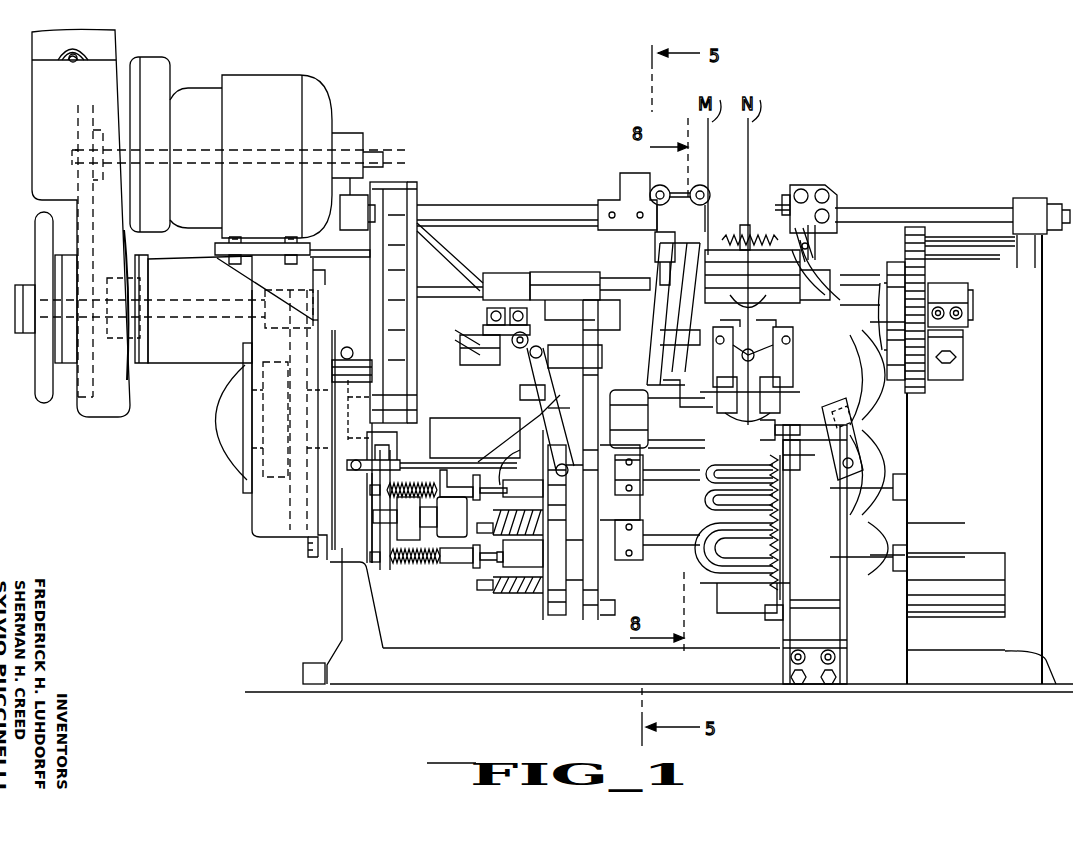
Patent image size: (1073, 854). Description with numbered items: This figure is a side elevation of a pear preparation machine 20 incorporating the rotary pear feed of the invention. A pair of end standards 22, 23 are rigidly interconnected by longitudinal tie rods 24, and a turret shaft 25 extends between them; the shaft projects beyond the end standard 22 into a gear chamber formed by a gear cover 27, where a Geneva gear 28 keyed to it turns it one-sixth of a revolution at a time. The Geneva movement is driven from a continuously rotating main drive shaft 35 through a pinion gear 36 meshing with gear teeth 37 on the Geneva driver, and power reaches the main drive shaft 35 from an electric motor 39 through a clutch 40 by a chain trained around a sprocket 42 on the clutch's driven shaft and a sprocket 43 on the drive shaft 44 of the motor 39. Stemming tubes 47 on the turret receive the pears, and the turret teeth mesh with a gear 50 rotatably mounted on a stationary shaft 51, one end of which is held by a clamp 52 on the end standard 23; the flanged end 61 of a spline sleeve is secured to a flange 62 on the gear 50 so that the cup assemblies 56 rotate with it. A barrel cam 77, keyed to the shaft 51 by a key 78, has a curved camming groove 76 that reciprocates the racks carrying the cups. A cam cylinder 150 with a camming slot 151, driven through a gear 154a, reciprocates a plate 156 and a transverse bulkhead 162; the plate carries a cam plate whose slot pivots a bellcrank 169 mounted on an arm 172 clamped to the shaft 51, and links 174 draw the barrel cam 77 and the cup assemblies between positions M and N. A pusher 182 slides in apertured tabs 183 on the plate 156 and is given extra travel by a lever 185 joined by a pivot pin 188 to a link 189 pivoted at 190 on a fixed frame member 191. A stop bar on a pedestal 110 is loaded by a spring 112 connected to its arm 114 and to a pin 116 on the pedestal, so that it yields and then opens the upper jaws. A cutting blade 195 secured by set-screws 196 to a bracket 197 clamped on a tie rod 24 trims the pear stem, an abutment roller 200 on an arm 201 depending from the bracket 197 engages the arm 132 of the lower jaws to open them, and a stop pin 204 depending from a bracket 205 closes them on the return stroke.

The pear processing machine 20 is at (843, 133).
The end standard 22 is at (357, 592).
The end standard 23 is at (990, 484).
The longitudinal tie rods 24 is at (445, 205).
The turret shaft 25 is at (700, 423).
The gear cover 27 is at (253, 428).
The Geneva gear 28 is at (272, 466).
The main drive shaft 35 is at (228, 302).
The pinion gear 36 is at (292, 293).
The gear teeth 37 is at (300, 548).
The electric motor 39 is at (332, 99).
The clutch 40 is at (140, 328).
The sprocket 42 is at (84, 388).
The sprocket 43 is at (78, 133).
The drive shaft 44 is at (244, 153).
The stemming tubes 47 is at (872, 346).
The gear 50 is at (918, 395).
The shaft 51 is at (972, 307).
The clamp 52 is at (972, 316).
The cup assembly 56 is at (780, 378).
The flanged end 61 is at (980, 270).
The flange 62 is at (966, 343).
The curved camming groove 76 is at (655, 241).
The barrel cam 77 is at (595, 295).
The key 78 is at (600, 272).
The pedestal 110 is at (840, 445).
The spring 112 is at (778, 505).
The arm 114 is at (796, 470).
The pin 116 is at (765, 605).
The arm 132 is at (656, 422).
The cam cylinder 150 is at (481, 420).
The camming slot 151 is at (485, 432).
The gear 154a is at (338, 468).
The plate 156 is at (524, 377).
The transverse bulkhead 162 is at (598, 607).
The bellcrank 169 is at (478, 380).
The arm 172 is at (487, 275).
The links 174 is at (545, 300).
The pusher 182 is at (598, 357).
The apertured tabs 183 is at (472, 345).
The lever 185 is at (553, 394).
The pivot pin 188 is at (548, 445).
The link 189 is at (496, 440).
The pivot 190 is at (354, 467).
The fixed frame member 191 is at (356, 521).
The cutting blade 195 is at (787, 195).
The set-screws 196 is at (785, 195).
The bracket 197 is at (832, 194).
The abutment roller 200 is at (815, 272).
The arm 201 is at (825, 250).
The stop pin 204 is at (714, 245).
The bracket 205 is at (698, 228).